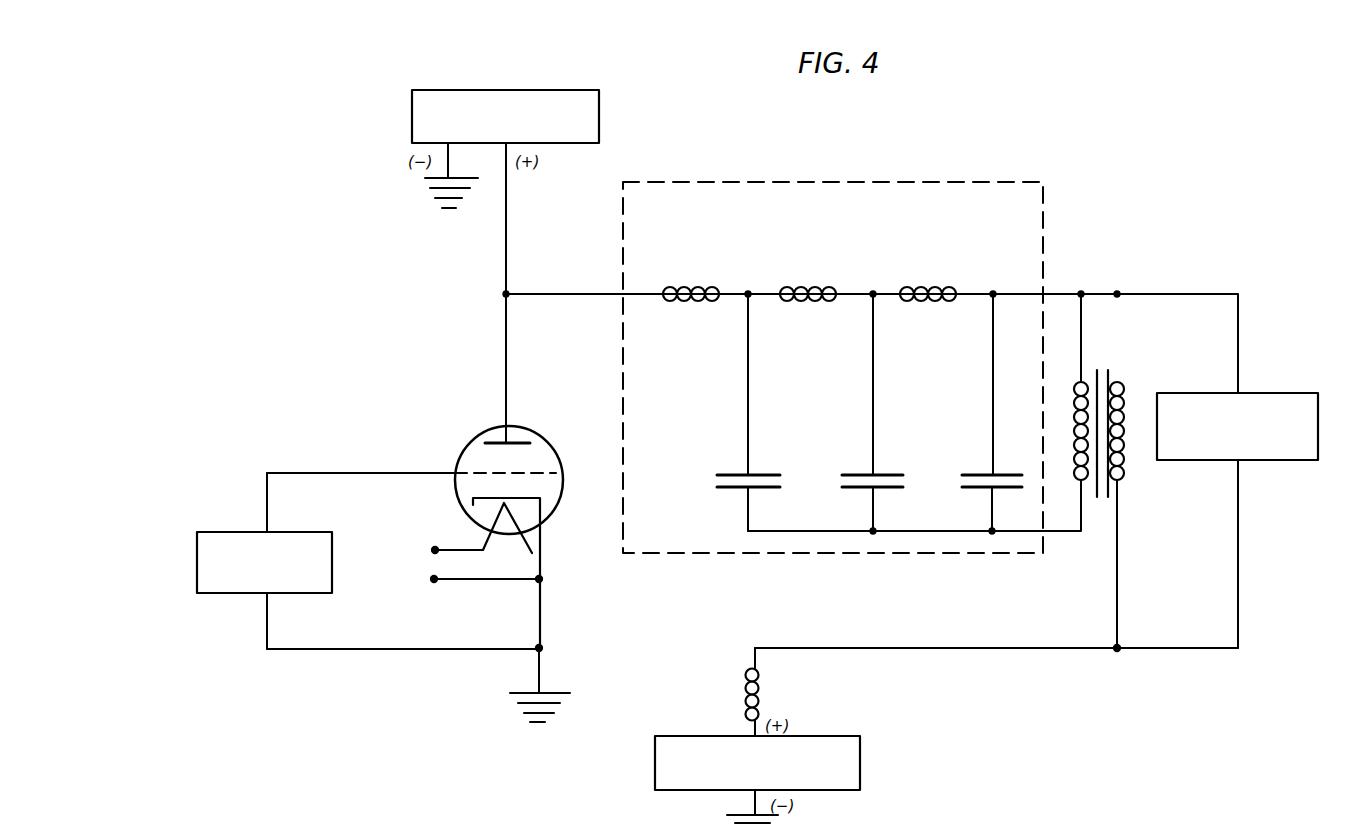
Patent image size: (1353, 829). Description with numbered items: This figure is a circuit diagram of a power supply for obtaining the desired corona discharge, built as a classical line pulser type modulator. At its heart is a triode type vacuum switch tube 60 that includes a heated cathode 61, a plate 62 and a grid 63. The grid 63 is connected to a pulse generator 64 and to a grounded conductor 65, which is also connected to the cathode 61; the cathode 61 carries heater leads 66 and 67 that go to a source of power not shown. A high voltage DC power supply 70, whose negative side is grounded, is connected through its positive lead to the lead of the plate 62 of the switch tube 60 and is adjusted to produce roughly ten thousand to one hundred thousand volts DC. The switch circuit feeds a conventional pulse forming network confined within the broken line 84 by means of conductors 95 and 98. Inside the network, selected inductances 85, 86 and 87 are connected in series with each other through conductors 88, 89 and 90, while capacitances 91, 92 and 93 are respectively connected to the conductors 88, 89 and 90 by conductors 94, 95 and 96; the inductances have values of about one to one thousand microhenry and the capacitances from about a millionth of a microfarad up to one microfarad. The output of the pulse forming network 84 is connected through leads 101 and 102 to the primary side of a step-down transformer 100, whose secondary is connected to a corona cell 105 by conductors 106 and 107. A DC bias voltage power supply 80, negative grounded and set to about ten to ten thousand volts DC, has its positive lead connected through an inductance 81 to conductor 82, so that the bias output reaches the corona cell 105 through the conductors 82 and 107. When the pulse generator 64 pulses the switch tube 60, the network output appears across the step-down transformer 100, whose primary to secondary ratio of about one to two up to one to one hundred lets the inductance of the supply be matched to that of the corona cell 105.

The switch tube 60 is at (467, 442).
The cathode 61 is at (542, 563).
The plate 62 is at (506, 398).
The grid 63 is at (410, 473).
The pulse generator 64 is at (233, 593).
The grounded conductor 65 is at (410, 649).
The heater lead 66 is at (432, 551).
The heater lead 67 is at (473, 582).
The DC power supply 70 is at (585, 90).
The bias voltage power supply 80 is at (850, 747).
The inductance 81 is at (763, 700).
The conductor 82 is at (1063, 648).
The pulse forming network 84 is at (1043, 220).
The inductance 85 is at (692, 285).
The inductance 86 is at (802, 285).
The inductance 87 is at (928, 293).
The conductor 88 is at (735, 296).
The conductor 89 is at (855, 296).
The conductor 90 is at (975, 296).
The capacitance 91 is at (768, 473).
The capacitance 92 is at (892, 473).
The capacitance 93 is at (1005, 473).
The conductor 94 is at (748, 410).
The conductor 95 is at (873, 407).
The conductor 96 is at (993, 393).
The conductor 98 is at (560, 293).
The step-down transformer 100 is at (1103, 368).
The lead 101 is at (1057, 293).
The lead 102 is at (1070, 531).
The corona cell 105 is at (1282, 392).
The conductor 106 is at (1208, 293).
The conductor 107 is at (1238, 530).